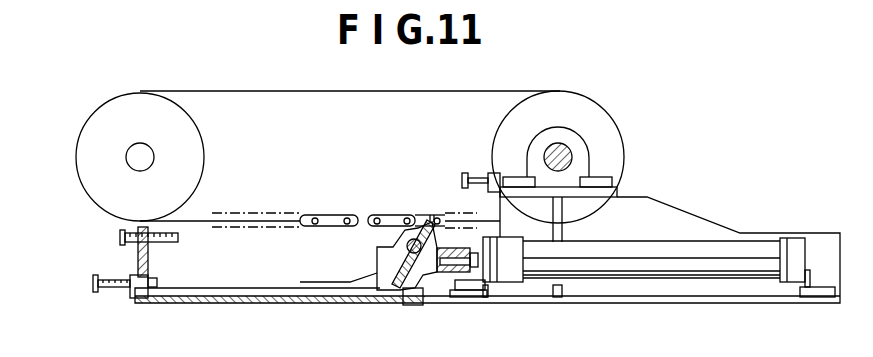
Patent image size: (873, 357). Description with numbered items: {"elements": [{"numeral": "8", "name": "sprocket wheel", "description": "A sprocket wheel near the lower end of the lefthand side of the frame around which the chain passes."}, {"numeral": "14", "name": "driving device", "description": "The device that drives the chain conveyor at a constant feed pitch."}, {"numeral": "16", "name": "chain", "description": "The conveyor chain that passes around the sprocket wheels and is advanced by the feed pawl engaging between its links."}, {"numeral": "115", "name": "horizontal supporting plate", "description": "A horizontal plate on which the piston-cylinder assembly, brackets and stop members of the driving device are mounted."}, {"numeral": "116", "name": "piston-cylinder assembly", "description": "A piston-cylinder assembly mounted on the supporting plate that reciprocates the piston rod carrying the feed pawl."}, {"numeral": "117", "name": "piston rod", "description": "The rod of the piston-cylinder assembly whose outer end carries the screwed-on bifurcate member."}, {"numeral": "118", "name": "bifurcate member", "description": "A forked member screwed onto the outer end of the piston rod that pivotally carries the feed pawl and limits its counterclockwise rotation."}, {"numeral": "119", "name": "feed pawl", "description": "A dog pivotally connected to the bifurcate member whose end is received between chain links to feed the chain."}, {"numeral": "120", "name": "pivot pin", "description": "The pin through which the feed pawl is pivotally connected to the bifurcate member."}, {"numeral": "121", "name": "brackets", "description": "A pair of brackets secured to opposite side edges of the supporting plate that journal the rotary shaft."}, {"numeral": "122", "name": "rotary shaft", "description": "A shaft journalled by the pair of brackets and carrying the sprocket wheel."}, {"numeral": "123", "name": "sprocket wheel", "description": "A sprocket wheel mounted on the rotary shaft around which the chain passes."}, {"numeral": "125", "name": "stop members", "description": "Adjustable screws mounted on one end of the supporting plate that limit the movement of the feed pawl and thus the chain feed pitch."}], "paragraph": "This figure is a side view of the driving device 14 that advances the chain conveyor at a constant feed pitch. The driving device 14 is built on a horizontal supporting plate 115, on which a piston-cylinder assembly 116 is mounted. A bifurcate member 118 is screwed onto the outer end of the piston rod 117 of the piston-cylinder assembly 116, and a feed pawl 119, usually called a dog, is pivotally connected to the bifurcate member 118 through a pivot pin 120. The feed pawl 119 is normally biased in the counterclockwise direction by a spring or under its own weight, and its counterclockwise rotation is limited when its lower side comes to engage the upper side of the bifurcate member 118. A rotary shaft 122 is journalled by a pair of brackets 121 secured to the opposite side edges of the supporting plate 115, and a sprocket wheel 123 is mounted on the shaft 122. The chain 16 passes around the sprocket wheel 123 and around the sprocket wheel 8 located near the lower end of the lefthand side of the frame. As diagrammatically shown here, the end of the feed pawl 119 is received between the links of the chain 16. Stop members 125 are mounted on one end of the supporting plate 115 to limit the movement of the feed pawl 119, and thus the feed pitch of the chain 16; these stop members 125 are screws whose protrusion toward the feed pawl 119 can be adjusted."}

The roller 8 is at (182, 135).
The frame 14 is at (722, 210).
The belt 16 is at (249, 91).
The base 115 is at (610, 300).
The cylinder 116 is at (682, 263).
The piston rod 117 is at (463, 278).
The bracket 118 is at (409, 300).
The link arm 119 is at (428, 222).
The pivot block 120 is at (395, 240).
The bearing 121 is at (558, 127).
The shaft 122 is at (572, 157).
The roller 123 is at (608, 116).
The adjusting screw 125 is at (163, 242).